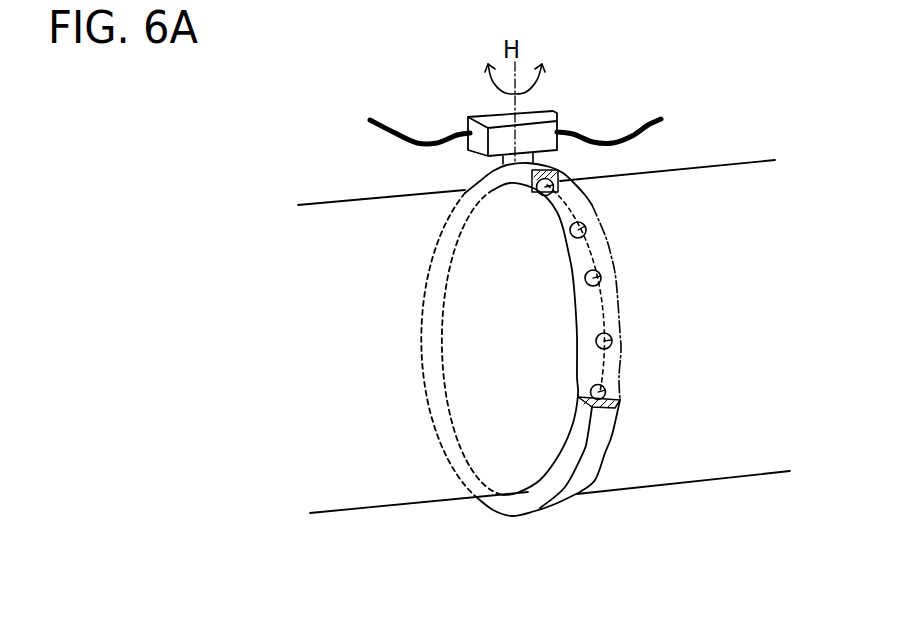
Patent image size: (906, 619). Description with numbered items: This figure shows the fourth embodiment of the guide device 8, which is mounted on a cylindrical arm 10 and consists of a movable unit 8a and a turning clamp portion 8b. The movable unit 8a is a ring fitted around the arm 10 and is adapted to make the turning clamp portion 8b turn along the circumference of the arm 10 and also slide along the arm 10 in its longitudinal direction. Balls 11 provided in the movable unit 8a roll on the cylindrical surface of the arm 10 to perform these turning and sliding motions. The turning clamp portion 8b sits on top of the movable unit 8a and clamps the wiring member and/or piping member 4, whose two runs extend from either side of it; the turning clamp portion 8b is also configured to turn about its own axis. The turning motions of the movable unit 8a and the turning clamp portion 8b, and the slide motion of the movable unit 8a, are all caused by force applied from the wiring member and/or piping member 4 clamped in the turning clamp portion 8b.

The wiring member and/or piping member 4 is at (422, 133).
The fourth guide device 8 is at (637, 87).
The movable unit 8a is at (567, 496).
The turning clamp portion 8b is at (542, 123).
The arm 10 is at (338, 206).
The balls 11 is at (555, 189).